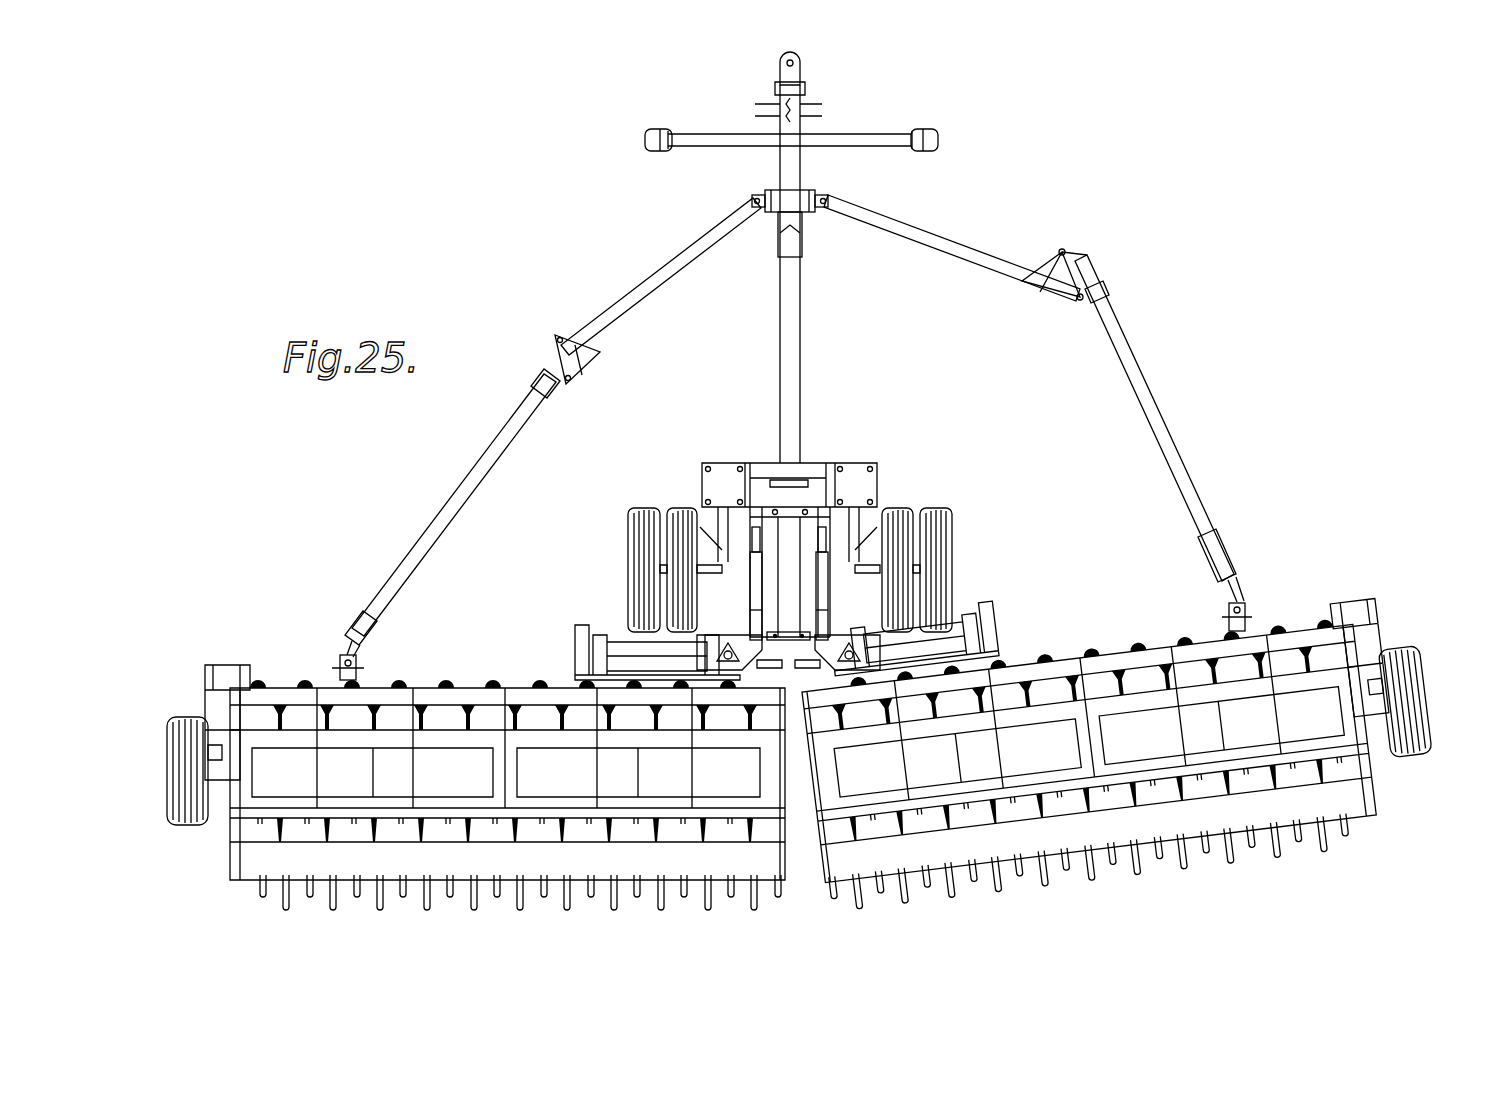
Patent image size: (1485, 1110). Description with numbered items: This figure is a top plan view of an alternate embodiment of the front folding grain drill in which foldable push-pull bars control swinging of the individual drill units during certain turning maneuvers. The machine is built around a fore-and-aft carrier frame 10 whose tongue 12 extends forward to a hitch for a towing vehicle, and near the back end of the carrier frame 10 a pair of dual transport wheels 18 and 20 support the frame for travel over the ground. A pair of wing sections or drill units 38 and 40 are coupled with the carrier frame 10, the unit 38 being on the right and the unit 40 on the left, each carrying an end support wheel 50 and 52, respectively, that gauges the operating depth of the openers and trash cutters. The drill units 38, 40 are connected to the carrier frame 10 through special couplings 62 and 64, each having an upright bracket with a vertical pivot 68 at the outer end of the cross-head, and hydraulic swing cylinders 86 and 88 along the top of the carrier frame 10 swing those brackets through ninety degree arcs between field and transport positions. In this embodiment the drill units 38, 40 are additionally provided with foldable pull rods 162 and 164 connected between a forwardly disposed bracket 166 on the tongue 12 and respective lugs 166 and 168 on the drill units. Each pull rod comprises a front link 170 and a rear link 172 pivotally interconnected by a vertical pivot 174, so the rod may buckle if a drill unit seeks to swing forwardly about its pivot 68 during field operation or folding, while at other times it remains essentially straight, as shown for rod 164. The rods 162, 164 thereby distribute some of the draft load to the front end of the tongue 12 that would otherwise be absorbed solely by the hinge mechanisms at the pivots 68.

The carrier frame 10 is at (812, 394).
The tongue 12 is at (788, 168).
The dual transport wheel 18 is at (935, 518).
The dual transport wheel 20 is at (637, 512).
The drill unit 38 is at (1266, 870).
The drill unit 40 is at (246, 888).
The end support wheel 50 is at (1414, 645).
The end support wheel 52 is at (181, 718).
The coupling 62 is at (965, 605).
The coupling 64 is at (622, 630).
The vertical pivot 68 is at (735, 643).
The hydraulic swing cylinder 86 is at (822, 575).
The hydraulic swing cylinder 88 is at (752, 573).
The foldable pull rod 162 is at (1114, 272).
The foldable pull rod 164 is at (557, 328).
The bracket 166 is at (808, 192).
The lug 168 is at (358, 674).
The front link 170 is at (958, 250).
The rear link 172 is at (1164, 430).
The vertical pivot 174 is at (1079, 302).